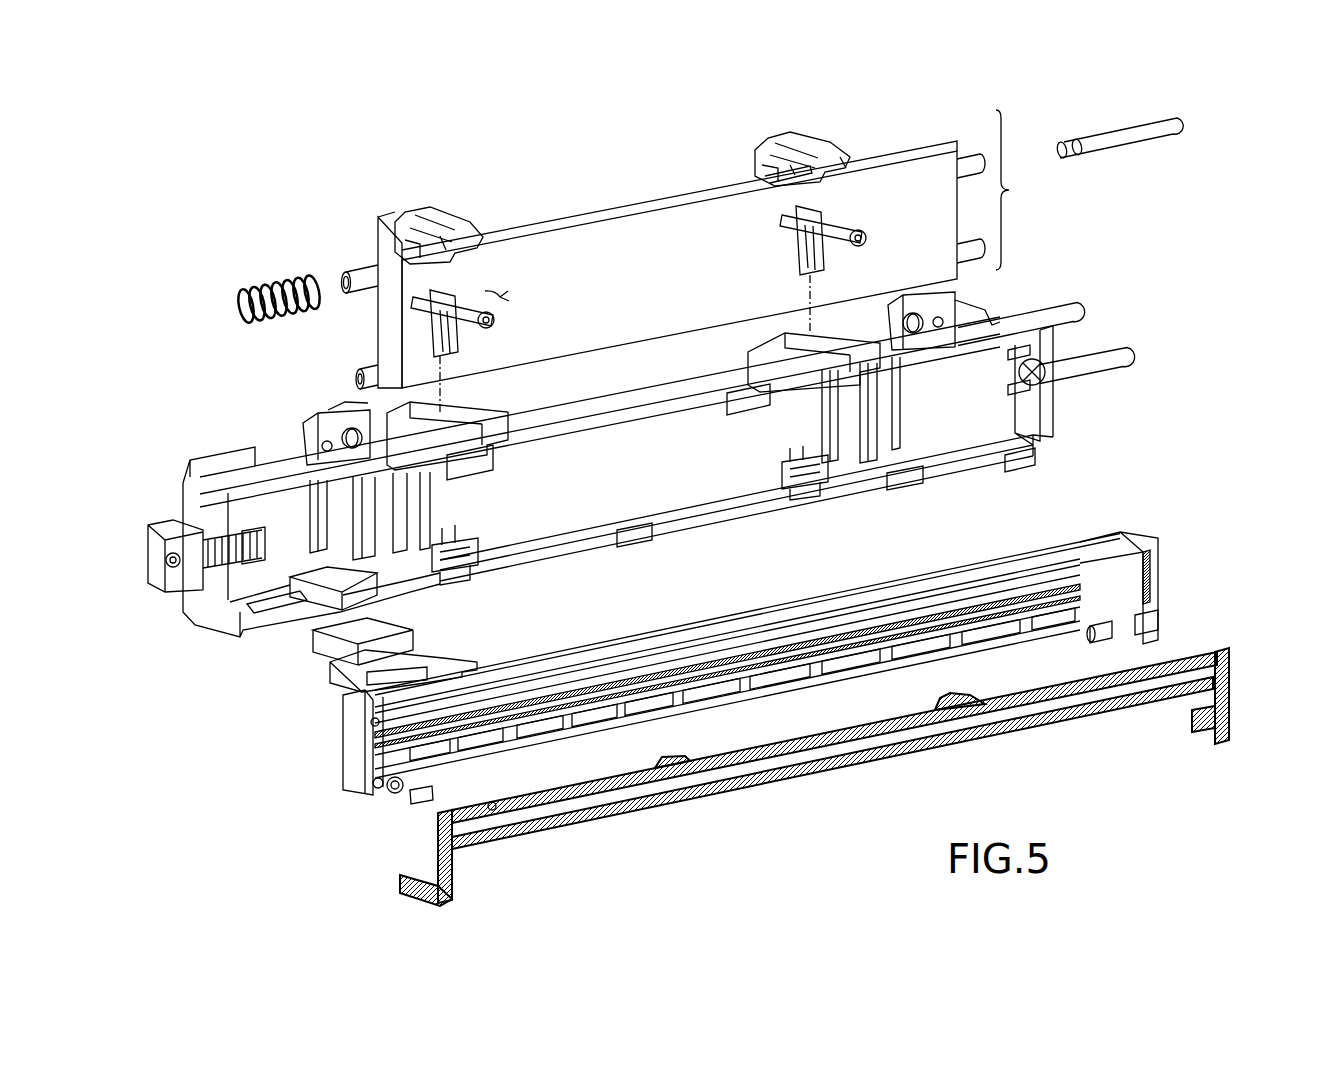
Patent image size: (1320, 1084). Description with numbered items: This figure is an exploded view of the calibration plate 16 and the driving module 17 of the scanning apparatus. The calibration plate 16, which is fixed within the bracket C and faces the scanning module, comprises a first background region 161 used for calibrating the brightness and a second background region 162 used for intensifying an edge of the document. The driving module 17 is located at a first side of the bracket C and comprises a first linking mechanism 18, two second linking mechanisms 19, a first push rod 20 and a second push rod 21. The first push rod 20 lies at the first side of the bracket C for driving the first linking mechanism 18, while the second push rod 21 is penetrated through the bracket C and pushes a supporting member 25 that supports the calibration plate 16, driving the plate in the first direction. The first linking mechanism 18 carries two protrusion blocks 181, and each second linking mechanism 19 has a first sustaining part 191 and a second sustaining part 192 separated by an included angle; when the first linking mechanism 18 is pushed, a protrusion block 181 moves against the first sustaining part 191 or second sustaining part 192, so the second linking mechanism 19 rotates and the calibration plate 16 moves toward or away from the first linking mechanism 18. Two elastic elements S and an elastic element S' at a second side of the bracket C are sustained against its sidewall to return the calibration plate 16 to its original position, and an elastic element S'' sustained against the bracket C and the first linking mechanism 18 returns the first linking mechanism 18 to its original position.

The calibration plate 16 is at (834, 756).
The first background region 161 is at (1065, 702).
The second background region 162 is at (1133, 683).
The driving module 17 is at (1020, 190).
The first linking mechanism 18 is at (887, 140).
The protrusion block 181 is at (437, 210).
The first sustaining part 191 is at (795, 158).
The second sustaining part 192 is at (861, 214).
The second linking mechanism 19 is at (503, 295).
The first push rod 20 is at (1123, 137).
The second push rod 21 is at (1087, 363).
The supporting member 25 is at (1117, 530).
The bracket C is at (273, 460).
The elastic element S is at (649, 532).
The elastic element S' is at (204, 538).
The elastic element S'' is at (263, 280).